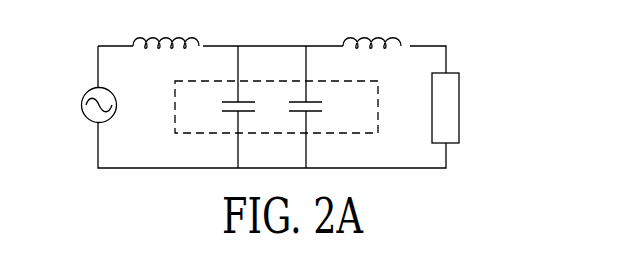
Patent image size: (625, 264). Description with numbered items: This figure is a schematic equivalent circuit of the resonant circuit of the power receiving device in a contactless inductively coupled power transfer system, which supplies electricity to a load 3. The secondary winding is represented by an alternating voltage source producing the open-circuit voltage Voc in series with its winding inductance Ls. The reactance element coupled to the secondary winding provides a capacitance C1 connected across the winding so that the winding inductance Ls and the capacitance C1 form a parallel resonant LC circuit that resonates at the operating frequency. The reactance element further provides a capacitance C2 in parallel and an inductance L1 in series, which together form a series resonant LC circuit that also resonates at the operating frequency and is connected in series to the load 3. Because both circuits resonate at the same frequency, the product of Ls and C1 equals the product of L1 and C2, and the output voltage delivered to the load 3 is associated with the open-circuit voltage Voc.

The load 3 is at (459, 113).
The open-circuit voltage Voc is at (78, 105).
The winding inductance Ls is at (166, 25).
The inductance L1 is at (372, 26).
The capacitance C1 is at (222, 107).
The capacitance C2 is at (321, 107).